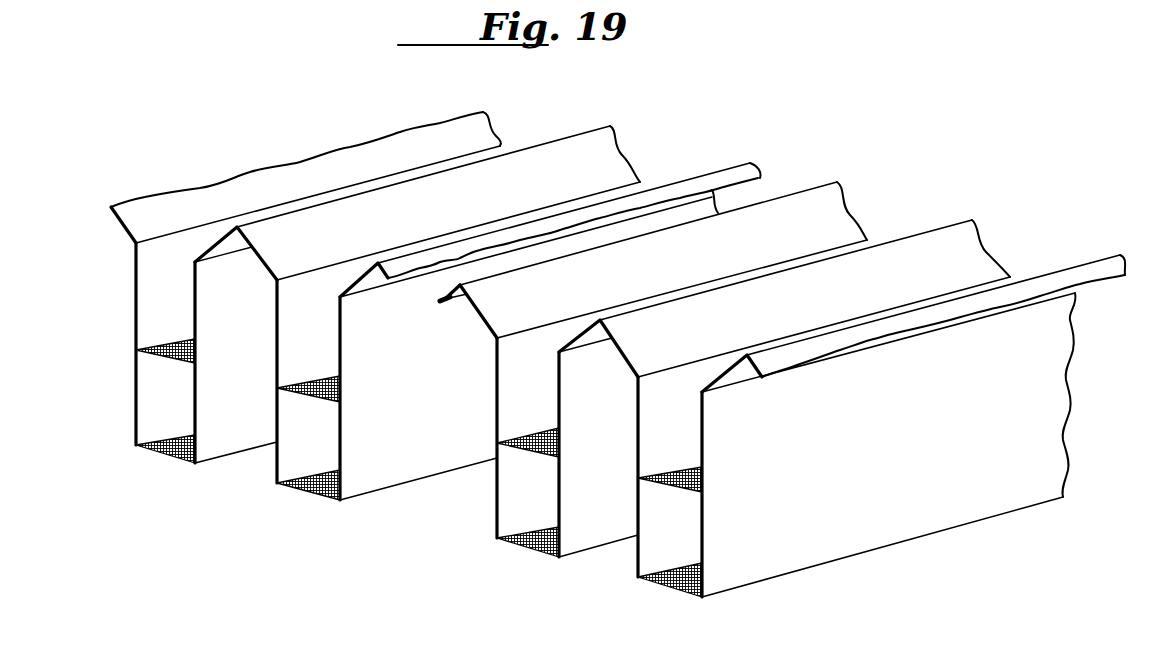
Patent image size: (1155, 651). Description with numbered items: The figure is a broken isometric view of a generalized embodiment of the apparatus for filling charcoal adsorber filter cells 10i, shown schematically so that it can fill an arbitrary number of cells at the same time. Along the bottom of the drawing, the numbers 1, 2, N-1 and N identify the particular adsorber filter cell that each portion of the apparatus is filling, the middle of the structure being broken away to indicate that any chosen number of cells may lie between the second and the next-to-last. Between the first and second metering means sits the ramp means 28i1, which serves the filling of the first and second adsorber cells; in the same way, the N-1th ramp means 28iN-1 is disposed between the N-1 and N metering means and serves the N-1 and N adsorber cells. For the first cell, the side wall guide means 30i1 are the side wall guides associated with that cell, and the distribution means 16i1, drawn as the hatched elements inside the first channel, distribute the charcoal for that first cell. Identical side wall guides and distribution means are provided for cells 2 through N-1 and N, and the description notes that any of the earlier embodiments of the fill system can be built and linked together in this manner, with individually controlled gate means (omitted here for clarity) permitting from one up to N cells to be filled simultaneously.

The apparatus for filling the N charcoal adsorber filter cells 10i is at (108, 233).
The ramp means 28i1 is at (219, 247).
The side wall guide means 30i1 is at (219, 494).
The distribution means 16i1 is at (165, 455).
The N-1th ramp means 28iN-1 is at (577, 337).
The first adsorber filter cell 1 is at (162, 377).
The second adsorber filter cell 2 is at (519, 354).
The N-1th adsorber filter cell N-1 is at (653, 393).
The Nth adsorber filter cell N is at (881, 444).